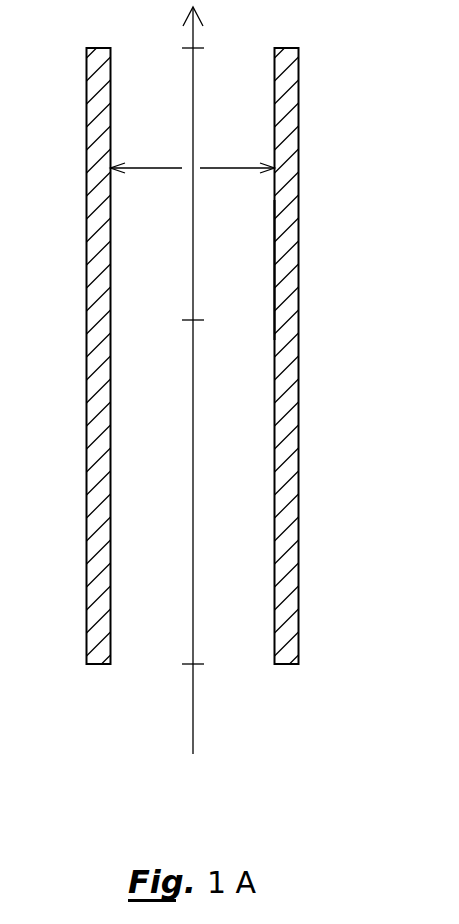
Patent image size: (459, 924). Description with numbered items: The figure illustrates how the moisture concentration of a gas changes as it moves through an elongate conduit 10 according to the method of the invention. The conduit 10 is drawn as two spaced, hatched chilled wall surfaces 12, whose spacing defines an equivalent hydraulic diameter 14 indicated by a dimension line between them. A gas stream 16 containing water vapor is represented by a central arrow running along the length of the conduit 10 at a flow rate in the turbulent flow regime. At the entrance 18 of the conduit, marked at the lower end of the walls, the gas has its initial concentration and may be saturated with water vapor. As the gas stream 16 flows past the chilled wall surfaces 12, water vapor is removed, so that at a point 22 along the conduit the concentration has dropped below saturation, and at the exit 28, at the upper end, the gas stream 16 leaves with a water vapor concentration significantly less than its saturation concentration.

The elongate conduit 10 is at (193, 385).
The chilled wall surfaces 12 is at (95, 292).
The equivalent hydraulic diameter 14 is at (168, 167).
The gas stream 16 is at (193, 744).
The entrance 18 is at (298, 664).
The point along the conduit 22 is at (274, 270).
The exit 28 is at (298, 48).